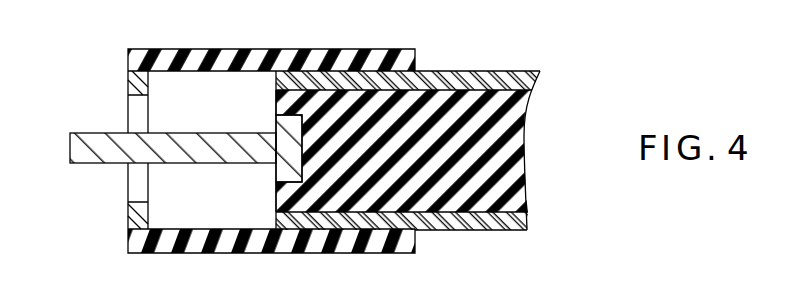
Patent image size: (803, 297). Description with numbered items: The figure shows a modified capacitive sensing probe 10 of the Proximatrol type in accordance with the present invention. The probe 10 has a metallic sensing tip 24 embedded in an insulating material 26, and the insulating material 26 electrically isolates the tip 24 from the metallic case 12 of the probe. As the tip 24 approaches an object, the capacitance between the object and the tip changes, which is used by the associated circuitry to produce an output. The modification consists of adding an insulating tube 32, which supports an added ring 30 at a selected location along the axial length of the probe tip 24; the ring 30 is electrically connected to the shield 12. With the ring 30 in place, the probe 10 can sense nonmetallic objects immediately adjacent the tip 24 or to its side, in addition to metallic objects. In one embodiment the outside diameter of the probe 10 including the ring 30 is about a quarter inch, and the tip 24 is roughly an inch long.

The probe 10 is at (554, 92).
The metallic case 12 is at (498, 230).
The sensing tip 24 is at (70, 152).
The insulating material 26 is at (528, 174).
The ring 30 is at (128, 79).
The insulating tube 32 is at (242, 49).